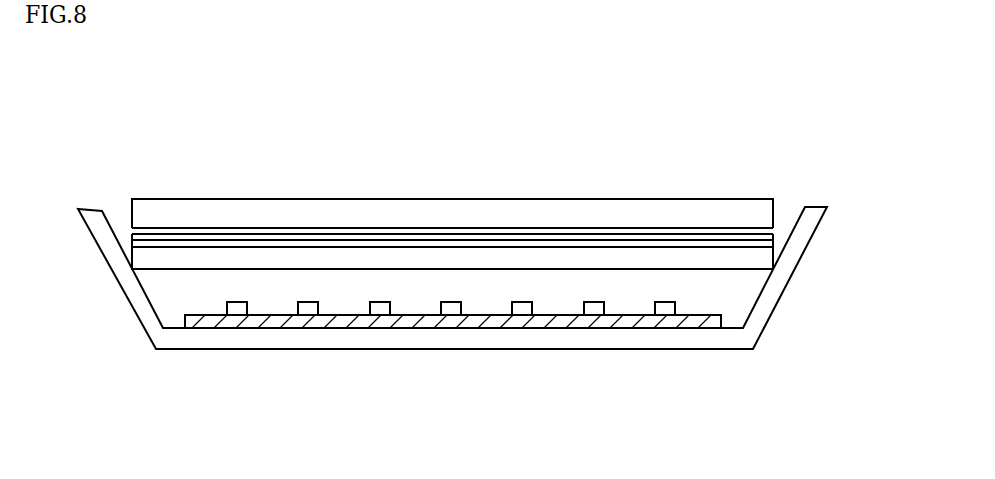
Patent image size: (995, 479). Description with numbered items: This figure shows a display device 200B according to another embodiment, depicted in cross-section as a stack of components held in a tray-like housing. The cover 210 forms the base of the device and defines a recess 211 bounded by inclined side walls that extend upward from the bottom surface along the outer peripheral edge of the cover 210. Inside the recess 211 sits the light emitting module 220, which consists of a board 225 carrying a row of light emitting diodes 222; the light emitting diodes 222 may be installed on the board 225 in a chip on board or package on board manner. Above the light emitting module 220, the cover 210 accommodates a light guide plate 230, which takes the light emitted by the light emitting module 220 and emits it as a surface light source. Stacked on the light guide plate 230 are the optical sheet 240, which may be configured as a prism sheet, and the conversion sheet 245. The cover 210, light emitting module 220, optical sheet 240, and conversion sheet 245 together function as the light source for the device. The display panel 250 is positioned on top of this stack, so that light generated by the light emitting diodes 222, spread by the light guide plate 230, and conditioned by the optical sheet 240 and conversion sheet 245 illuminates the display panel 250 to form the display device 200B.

The display device 200B is at (115, 124).
The cover 210 is at (125, 282).
The recess 211 is at (735, 297).
The light emitting module 220 is at (388, 396).
The light emitting diodes 222 is at (378, 310).
The board 225 is at (309, 322).
The light guide plate 230 is at (750, 263).
The optical sheet 240 is at (767, 239).
The conversion sheet 245 is at (767, 229).
The display panel 250 is at (715, 212).